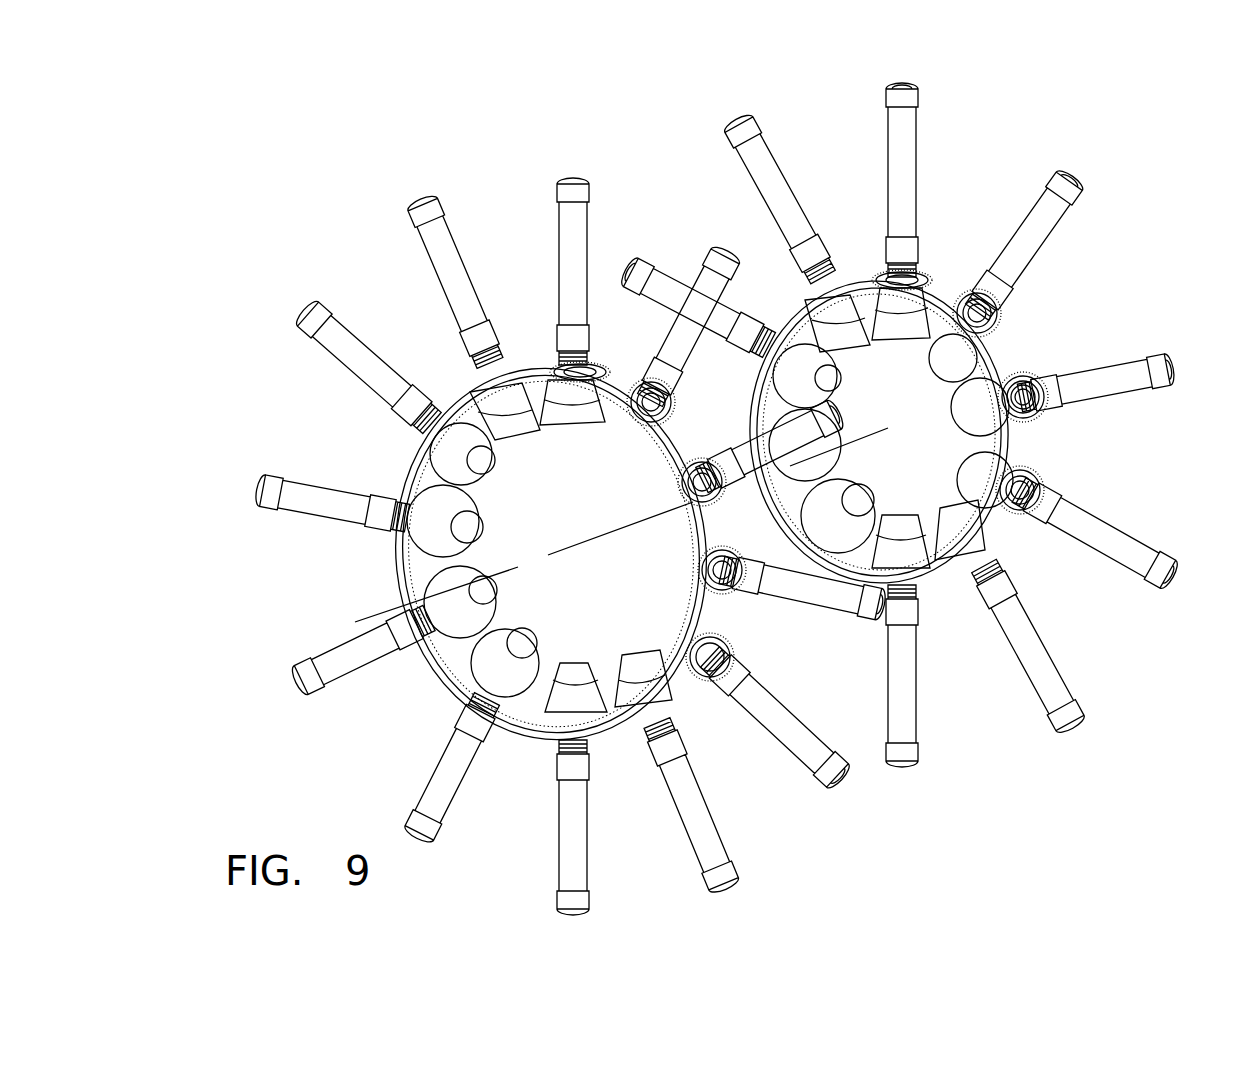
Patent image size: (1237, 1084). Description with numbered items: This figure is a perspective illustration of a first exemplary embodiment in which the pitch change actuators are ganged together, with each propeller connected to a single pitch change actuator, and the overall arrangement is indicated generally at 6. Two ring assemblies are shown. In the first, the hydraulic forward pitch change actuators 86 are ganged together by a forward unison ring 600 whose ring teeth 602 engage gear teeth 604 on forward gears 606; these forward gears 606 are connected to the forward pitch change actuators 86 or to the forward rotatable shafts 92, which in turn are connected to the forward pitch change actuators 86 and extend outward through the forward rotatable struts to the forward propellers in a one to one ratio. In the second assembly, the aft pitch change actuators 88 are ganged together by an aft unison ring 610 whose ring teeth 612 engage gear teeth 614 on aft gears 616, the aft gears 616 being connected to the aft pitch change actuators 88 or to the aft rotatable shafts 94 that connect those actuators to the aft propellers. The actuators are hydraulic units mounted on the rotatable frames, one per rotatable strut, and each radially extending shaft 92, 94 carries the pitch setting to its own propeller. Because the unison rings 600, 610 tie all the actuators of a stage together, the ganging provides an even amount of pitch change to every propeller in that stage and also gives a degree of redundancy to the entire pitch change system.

The centrifuge assembly axis 6 is at (378, 620).
The forward pitch change actuators 86 is at (478, 453).
The aft pitch change actuators 88 is at (973, 406).
The forward rotatable shafts 92 is at (350, 333).
The aft rotatable shafts 94 is at (918, 158).
The forward unison ring 600 is at (374, 433).
The ring teeth 602 is at (703, 524).
The gear teeth 604 is at (612, 372).
The forward gears 606 is at (600, 365).
The aft unison ring 610 is at (1023, 345).
The ring teeth 612 is at (1017, 448).
The gear teeth 614 is at (1025, 367).
The aft gears 616 is at (1047, 420).